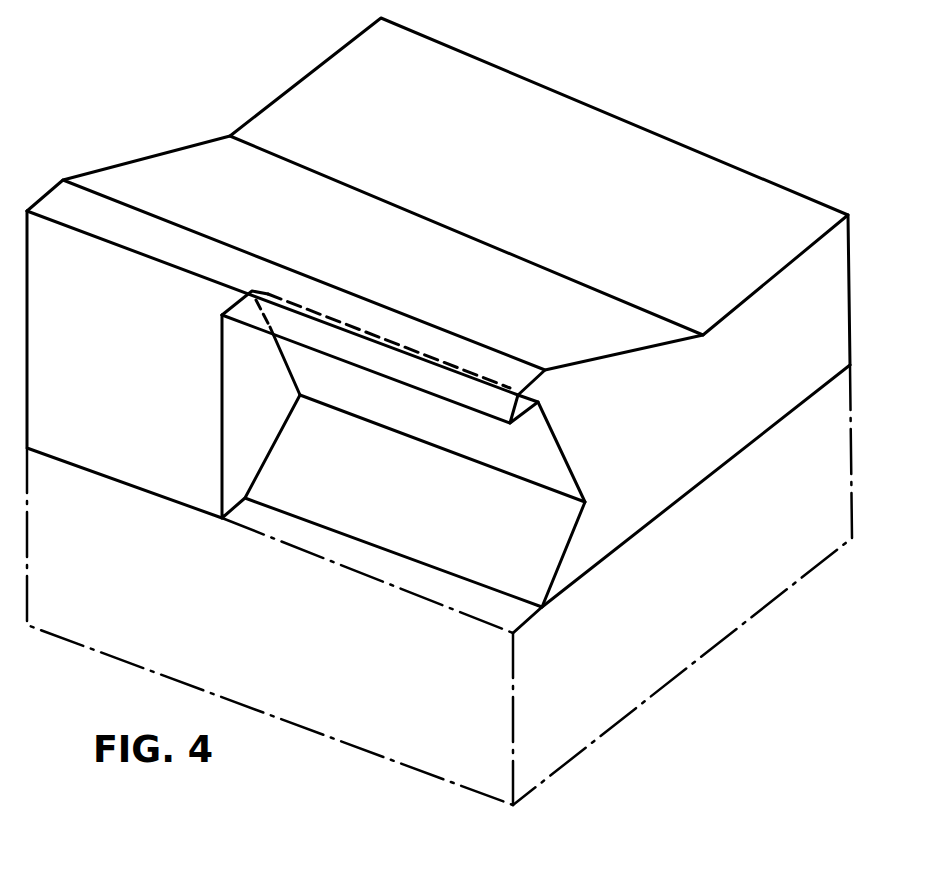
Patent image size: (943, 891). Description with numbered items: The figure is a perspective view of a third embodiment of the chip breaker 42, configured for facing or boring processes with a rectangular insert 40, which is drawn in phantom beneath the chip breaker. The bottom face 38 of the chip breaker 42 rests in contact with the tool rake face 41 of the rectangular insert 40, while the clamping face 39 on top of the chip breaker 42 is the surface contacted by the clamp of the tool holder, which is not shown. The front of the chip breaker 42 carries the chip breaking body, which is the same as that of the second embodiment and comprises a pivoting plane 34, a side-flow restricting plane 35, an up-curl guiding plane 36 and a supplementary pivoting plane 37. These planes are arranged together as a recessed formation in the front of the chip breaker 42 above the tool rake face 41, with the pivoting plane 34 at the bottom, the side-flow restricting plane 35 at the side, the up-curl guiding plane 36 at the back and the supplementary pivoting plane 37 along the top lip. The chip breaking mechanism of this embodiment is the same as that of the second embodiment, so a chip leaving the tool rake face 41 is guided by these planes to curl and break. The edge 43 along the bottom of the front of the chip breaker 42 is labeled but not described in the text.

The pivoting plane 34 is at (290, 488).
The side-flow restricting plane 35 is at (238, 412).
The up-curl guiding plane 36 is at (400, 413).
The supplementary pivoting plane 37 is at (452, 403).
The bottom face 38 is at (627, 542).
The clamping face 39 is at (647, 147).
The rectangular insert 40 is at (807, 517).
The tool rake face 41 is at (447, 592).
The chip breaker 42 is at (802, 342).
The bottom edge of front face 43 is at (393, 588).